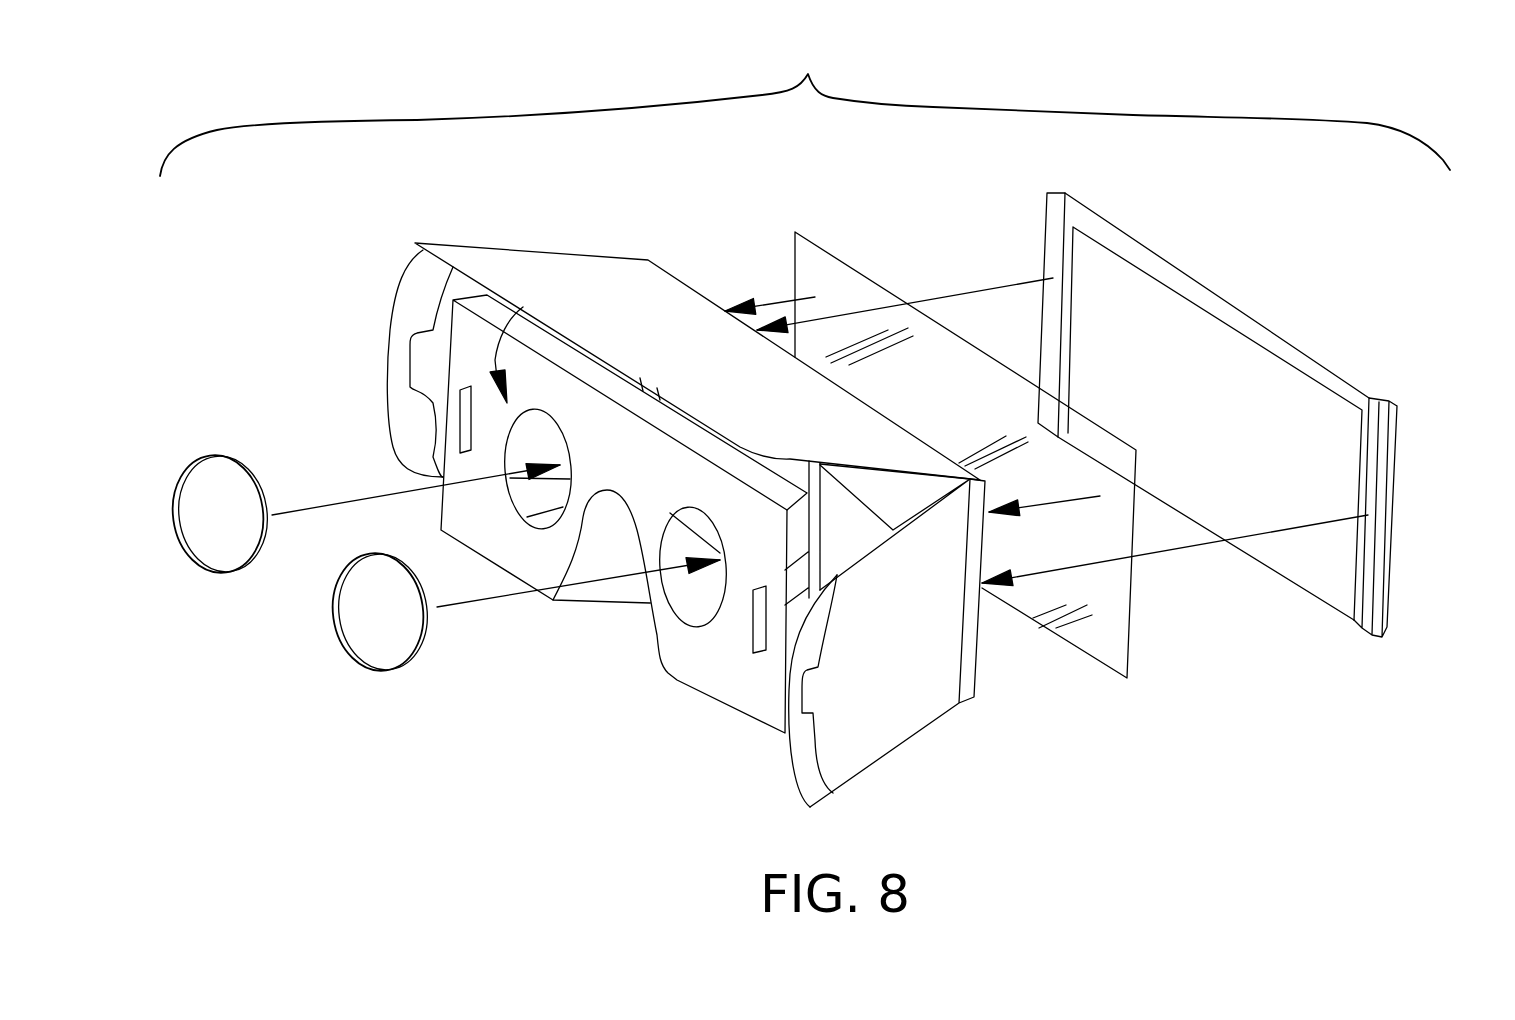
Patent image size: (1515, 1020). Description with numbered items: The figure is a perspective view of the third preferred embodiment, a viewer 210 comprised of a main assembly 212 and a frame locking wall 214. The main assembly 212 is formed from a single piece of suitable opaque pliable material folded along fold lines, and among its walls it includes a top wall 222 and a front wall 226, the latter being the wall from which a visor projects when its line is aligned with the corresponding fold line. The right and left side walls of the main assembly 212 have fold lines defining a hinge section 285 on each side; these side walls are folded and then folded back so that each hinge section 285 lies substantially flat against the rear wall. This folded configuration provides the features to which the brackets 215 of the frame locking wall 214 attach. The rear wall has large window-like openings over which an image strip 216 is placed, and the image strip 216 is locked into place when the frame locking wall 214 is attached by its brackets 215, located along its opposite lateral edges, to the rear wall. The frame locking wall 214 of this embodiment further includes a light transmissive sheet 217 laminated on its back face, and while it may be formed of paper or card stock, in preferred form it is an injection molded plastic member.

The viewer 210 is at (805, 108).
The main assembly 212 is at (607, 637).
The frame locking wall 214 is at (1195, 238).
The brackets 215 is at (1053, 233).
The image strip 216 is at (830, 283).
The light transmissive sheet 217 is at (1290, 393).
The top wall 222 is at (613, 290).
The front wall 226 is at (705, 663).
The hinge section 285 is at (968, 665).